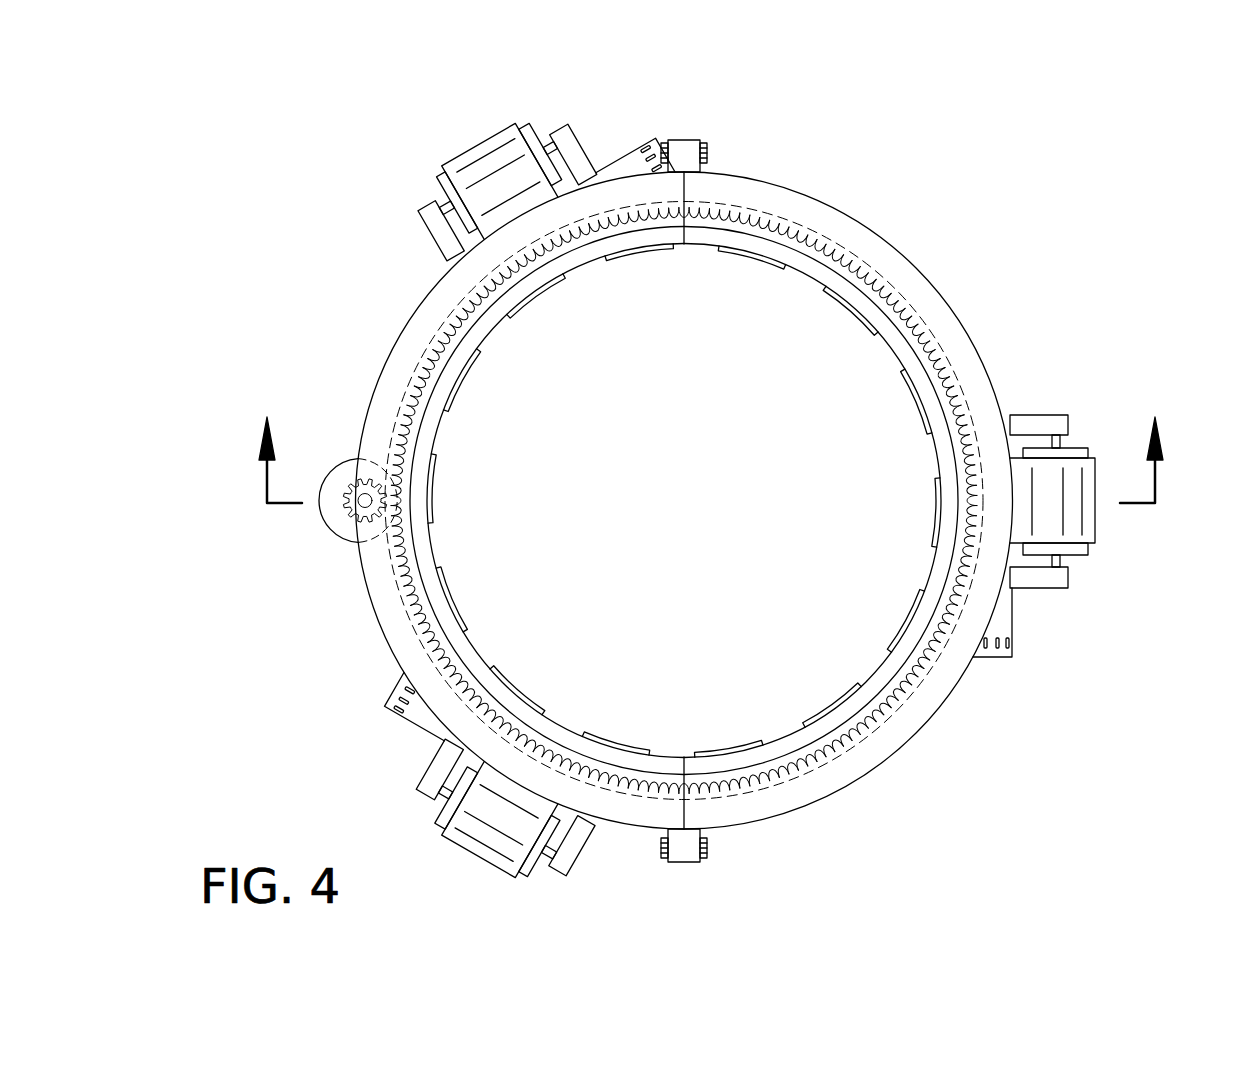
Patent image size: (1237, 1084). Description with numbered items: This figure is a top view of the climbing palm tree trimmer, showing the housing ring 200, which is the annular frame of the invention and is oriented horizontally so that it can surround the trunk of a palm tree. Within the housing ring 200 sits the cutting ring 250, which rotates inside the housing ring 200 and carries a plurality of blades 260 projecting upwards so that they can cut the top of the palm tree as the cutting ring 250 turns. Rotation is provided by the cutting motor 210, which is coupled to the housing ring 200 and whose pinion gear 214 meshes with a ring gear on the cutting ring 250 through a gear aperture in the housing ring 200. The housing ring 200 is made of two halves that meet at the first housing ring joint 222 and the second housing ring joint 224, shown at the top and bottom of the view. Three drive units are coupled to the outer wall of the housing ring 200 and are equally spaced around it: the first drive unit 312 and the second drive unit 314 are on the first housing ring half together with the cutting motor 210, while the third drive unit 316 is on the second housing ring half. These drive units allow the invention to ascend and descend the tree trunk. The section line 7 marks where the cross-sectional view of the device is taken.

The housing ring 200 is at (797, 202).
The cutting motor 210 is at (350, 541).
The pinion gear 214 is at (347, 510).
The first housing ring joint 222 is at (605, 125).
The second housing ring joint 224 is at (605, 875).
The cutting ring 250 is at (902, 347).
The plurality of blades 260 is at (432, 495).
The first drive unit 312 is at (481, 845).
The second drive unit 314 is at (477, 162).
The third drive unit 316 is at (1090, 532).
The cross-section line 7- 7 is at (709, 435).